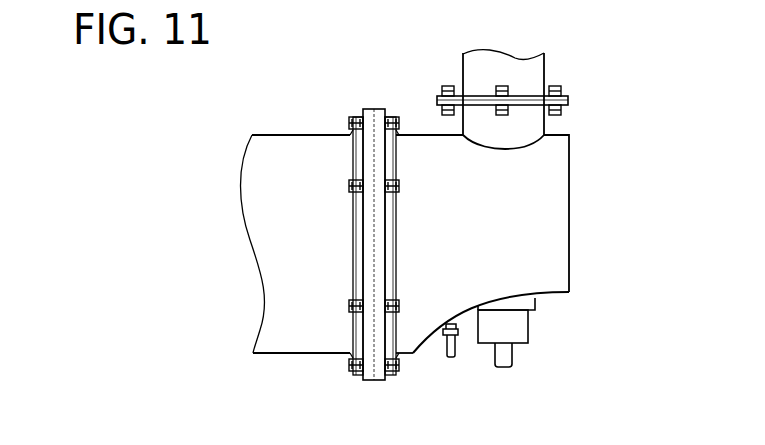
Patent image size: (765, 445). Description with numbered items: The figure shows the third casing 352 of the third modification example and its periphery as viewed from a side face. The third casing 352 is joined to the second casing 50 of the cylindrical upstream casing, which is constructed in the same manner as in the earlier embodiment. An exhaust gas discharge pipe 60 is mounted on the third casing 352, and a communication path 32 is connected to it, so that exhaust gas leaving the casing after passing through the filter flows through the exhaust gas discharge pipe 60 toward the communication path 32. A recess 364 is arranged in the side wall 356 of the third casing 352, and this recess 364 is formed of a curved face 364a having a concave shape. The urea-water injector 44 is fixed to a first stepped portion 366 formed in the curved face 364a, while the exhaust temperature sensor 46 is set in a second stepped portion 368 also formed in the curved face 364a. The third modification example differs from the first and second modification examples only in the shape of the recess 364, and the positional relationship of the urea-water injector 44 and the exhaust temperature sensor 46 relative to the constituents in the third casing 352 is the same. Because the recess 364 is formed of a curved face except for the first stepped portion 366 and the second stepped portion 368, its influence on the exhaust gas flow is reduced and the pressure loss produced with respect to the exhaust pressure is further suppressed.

The communication path 32 is at (535, 72).
The second casing 50 is at (300, 142).
The side wall 356 is at (423, 140).
The exhaust gas discharge pipe 60 is at (535, 126).
The third casing 352 is at (545, 200).
The curved face 364a is at (560, 294).
The first stepped portion 366 is at (526, 304).
The urea-water injector 44 is at (520, 338).
The recess 364 is at (551, 350).
The second stepped portion 368 is at (463, 328).
The exhaust temperature sensor 46 is at (445, 343).